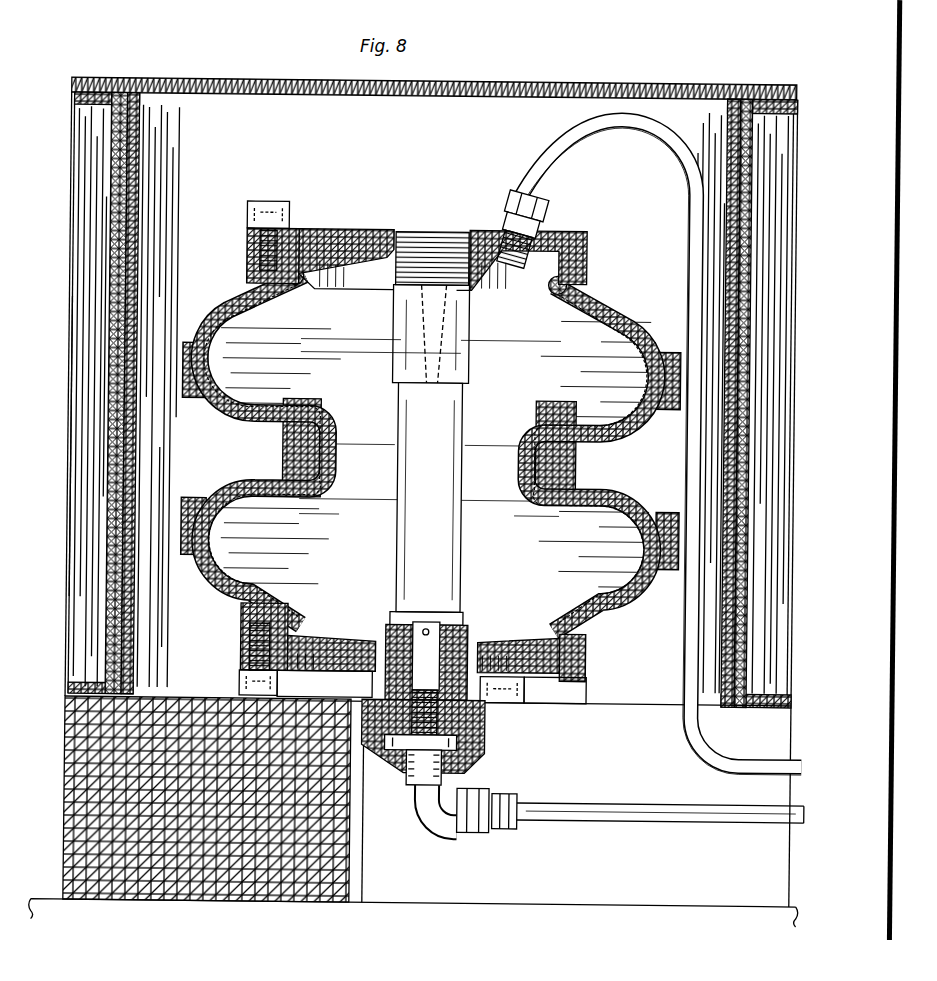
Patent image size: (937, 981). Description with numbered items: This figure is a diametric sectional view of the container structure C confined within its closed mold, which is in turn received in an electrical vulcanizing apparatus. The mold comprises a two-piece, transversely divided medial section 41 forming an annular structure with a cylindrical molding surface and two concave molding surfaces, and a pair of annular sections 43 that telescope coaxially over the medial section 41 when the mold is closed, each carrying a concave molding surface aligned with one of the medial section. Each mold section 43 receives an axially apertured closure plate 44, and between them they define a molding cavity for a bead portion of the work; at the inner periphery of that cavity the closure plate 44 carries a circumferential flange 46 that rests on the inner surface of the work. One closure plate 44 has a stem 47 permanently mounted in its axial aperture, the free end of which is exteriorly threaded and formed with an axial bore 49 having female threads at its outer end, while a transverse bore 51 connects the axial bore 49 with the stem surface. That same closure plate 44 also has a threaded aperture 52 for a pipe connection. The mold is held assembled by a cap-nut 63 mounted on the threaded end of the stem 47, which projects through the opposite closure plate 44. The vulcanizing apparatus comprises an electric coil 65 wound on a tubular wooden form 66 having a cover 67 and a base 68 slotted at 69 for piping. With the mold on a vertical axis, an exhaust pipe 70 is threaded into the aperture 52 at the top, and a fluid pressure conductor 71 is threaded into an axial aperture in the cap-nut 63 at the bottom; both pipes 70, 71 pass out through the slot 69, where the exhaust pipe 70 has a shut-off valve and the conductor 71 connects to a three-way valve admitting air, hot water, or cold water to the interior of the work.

The medial mold section 41 is at (590, 447).
The annular mold section 43 is at (605, 297).
The closure plate 44 is at (344, 246).
The circumferential flange 46 is at (336, 600).
The stem 47 is at (462, 548).
The axial bore 49 is at (455, 628).
The transverse bore 51 is at (390, 632).
The threaded aperture 52 is at (527, 250).
The cap-nut 63 is at (490, 735).
The electric coil 65 is at (115, 487).
The tubular wooden form 66 is at (140, 125).
The cover 67 is at (528, 82).
The base 68 is at (245, 903).
The slot 69 is at (362, 903).
The exhaust pipe 70 is at (686, 150).
The fluid pressure conductor 71 is at (578, 815).
The container structure C is at (250, 296).